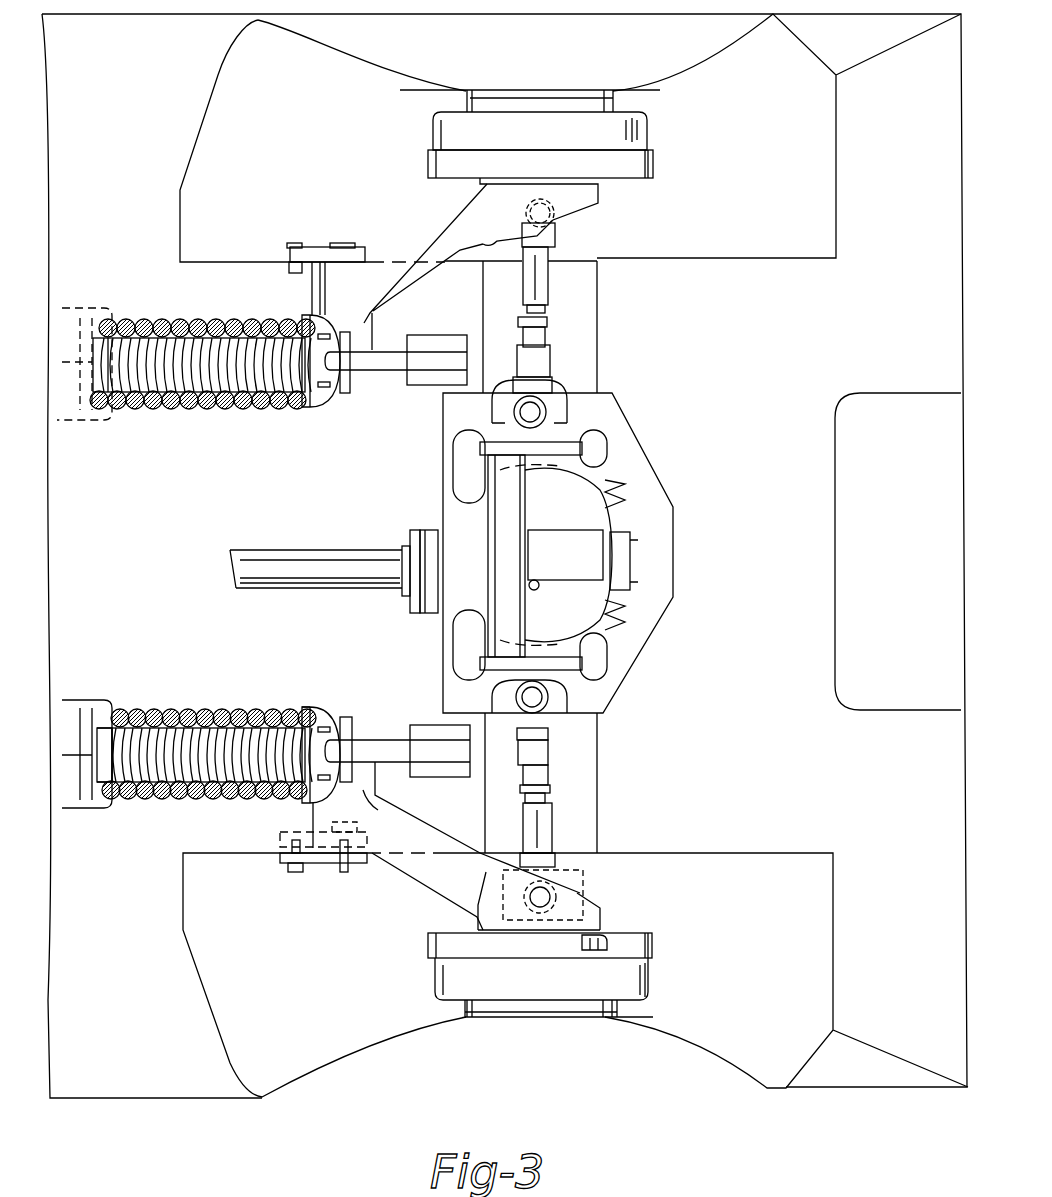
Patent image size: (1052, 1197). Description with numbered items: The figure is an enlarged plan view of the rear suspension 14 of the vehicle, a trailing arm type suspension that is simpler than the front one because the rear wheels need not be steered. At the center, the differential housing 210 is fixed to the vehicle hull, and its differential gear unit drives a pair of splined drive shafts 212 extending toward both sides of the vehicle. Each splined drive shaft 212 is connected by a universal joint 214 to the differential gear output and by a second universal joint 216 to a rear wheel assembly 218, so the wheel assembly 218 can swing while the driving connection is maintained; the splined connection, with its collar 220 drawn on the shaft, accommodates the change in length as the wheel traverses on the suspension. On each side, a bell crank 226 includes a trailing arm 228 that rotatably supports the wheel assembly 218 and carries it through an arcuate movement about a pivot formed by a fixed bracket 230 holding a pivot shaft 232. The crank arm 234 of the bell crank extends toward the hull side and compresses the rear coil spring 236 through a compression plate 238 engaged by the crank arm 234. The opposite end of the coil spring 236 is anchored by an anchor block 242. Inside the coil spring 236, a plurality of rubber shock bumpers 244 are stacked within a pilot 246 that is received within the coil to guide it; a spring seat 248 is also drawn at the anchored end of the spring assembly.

The rear suspension 14 is at (418, 680).
The differential housing 210 is at (440, 507).
The splined drive shafts 212 is at (548, 772).
The universal joint 214 is at (573, 698).
The universal joint 216 is at (588, 884).
The rear wheel assembly 218 is at (562, 1034).
The slip joint 220 is at (548, 797).
The bell crank 226 is at (385, 878).
The trailing arm 228 is at (388, 256).
The fixed bracket 230 is at (282, 860).
The pivot shaft 232 is at (330, 827).
The crank arm 234 is at (372, 372).
The rear coil spring 236 is at (225, 402).
The compression plate 238 is at (320, 408).
The anchor block 242 is at (70, 422).
The rubber shock bumpers 244 is at (170, 328).
The pilot 246 is at (317, 708).
The spring seat 248 is at (122, 712).